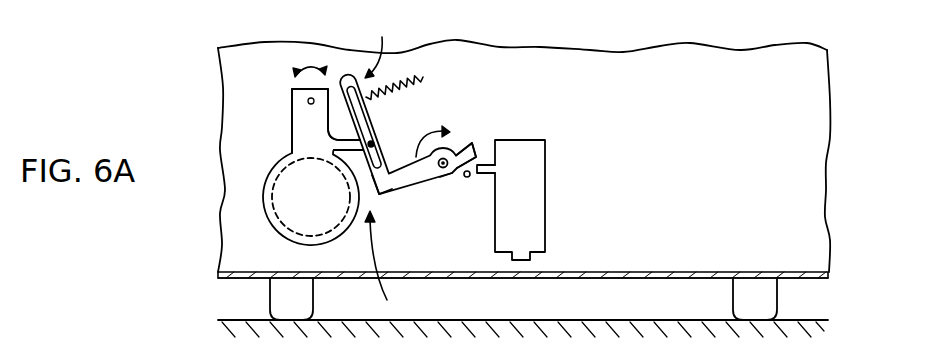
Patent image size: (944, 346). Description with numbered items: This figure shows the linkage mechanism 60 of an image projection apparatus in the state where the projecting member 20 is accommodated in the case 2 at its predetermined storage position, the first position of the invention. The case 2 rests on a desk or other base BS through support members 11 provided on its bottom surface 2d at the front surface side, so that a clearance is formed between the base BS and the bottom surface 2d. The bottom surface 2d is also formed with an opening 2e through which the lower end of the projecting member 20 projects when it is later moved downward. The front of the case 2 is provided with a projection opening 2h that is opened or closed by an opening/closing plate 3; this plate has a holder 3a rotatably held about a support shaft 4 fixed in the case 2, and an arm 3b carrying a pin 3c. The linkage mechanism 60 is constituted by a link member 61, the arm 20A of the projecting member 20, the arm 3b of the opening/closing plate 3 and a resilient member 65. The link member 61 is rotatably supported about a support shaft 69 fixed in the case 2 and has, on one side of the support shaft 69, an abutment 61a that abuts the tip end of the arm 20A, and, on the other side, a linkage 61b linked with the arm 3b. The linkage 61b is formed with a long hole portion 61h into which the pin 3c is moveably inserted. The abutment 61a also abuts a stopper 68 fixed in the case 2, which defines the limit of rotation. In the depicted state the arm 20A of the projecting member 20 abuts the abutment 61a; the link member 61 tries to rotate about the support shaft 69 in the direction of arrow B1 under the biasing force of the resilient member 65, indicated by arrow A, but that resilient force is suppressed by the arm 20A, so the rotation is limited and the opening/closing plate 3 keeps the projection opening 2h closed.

The case 2 is at (817, 215).
The bottom surface 2d is at (630, 278).
The opening 2e is at (502, 278).
The projection opening 2h is at (272, 230).
The opening/closing plate 3 is at (267, 183).
The holder 3a is at (305, 137).
The arm 3b is at (347, 140).
The pin 3c is at (441, 158).
The support shaft 4 is at (308, 101).
The support member 11 is at (313, 303).
The projecting member 20 is at (546, 215).
The arm 20A is at (488, 160).
The linkage mechanism 60 is at (383, 265).
The link member 61 is at (414, 184).
The abutment 61a is at (466, 147).
The linkage 61b is at (362, 117).
The long hole portion 61h is at (383, 193).
The resilient member 65 is at (396, 80).
The stopper 68 is at (468, 178).
The support shaft 69 is at (448, 170).
The direction of spring force A is at (377, 47).
The arrow B1 is at (439, 131).
The base BS is at (564, 320).